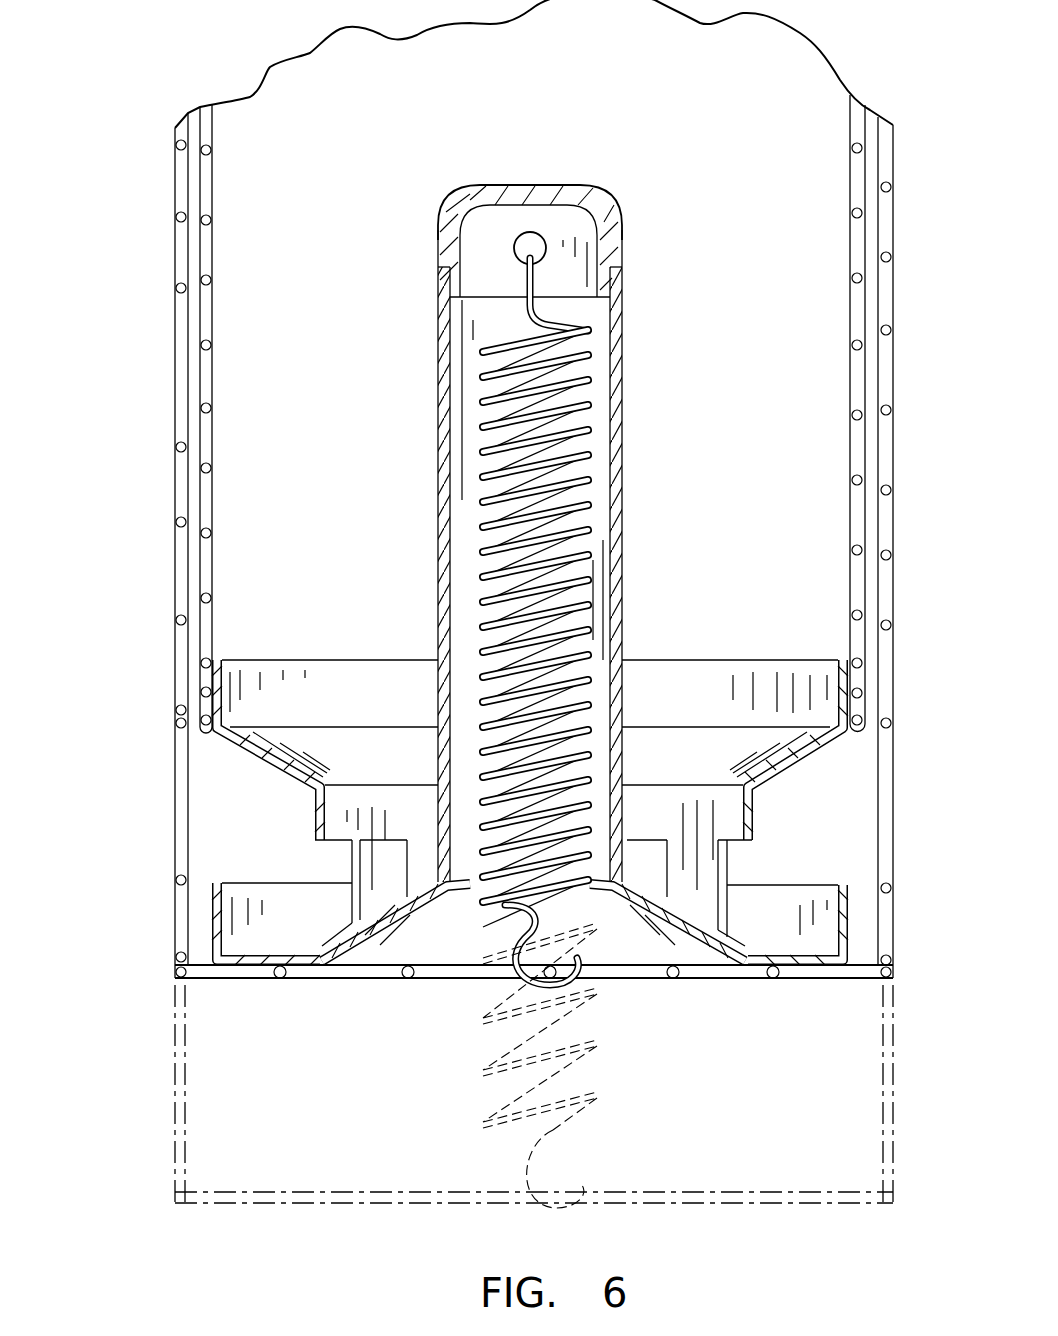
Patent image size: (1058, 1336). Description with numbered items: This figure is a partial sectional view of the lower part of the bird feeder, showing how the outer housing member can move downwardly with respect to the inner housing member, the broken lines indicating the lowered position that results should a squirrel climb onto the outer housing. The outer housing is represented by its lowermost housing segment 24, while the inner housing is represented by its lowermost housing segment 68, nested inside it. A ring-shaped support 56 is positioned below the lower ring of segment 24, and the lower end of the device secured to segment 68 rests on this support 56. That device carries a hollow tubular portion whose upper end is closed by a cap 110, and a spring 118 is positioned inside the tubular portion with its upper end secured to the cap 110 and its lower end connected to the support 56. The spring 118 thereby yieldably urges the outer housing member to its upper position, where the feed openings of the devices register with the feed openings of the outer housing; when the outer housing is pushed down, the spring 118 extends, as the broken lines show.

The housing segment 24 is at (175, 625).
The housing segment 68 is at (212, 520).
The ring-shaped support 56 is at (360, 970).
The cap 110 is at (613, 221).
The spring 118 is at (587, 712).